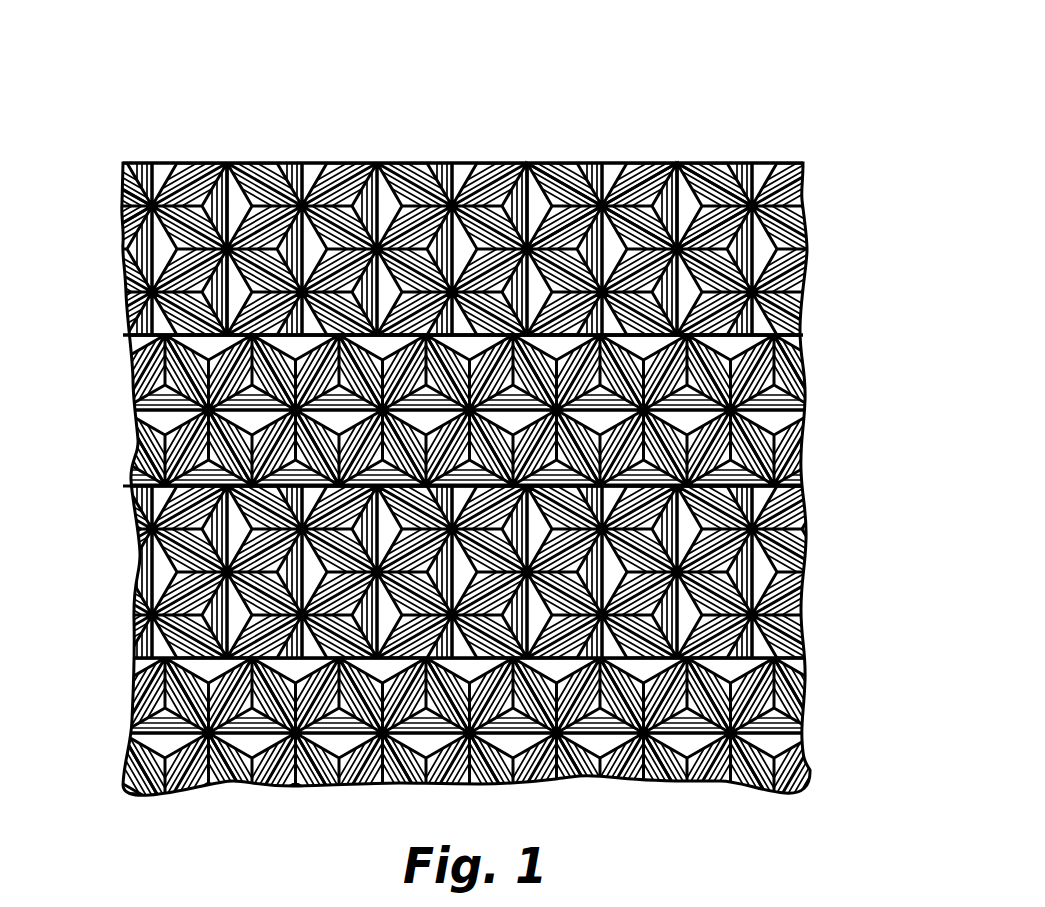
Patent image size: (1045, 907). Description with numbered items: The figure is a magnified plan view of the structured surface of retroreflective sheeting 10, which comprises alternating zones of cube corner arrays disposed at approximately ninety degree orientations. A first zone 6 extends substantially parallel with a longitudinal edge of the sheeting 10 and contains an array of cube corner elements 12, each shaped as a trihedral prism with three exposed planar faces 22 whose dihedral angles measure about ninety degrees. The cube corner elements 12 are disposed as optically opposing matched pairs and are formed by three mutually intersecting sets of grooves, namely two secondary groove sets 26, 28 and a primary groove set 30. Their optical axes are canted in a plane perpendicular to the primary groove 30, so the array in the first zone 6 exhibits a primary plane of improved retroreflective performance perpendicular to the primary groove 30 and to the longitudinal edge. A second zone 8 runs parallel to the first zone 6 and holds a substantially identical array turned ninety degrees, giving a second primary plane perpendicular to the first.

The retroreflective sheeting 10 is at (754, 72).
The first zone 6 is at (817, 163).
The second zone 8 is at (817, 339).
The cube corner elements 12 is at (707, 186).
The planar faces 22 is at (567, 202).
The secondary groove set 26 is at (123, 226).
The secondary groove set 28 is at (122, 203).
The primary groove set 30 is at (243, 197).